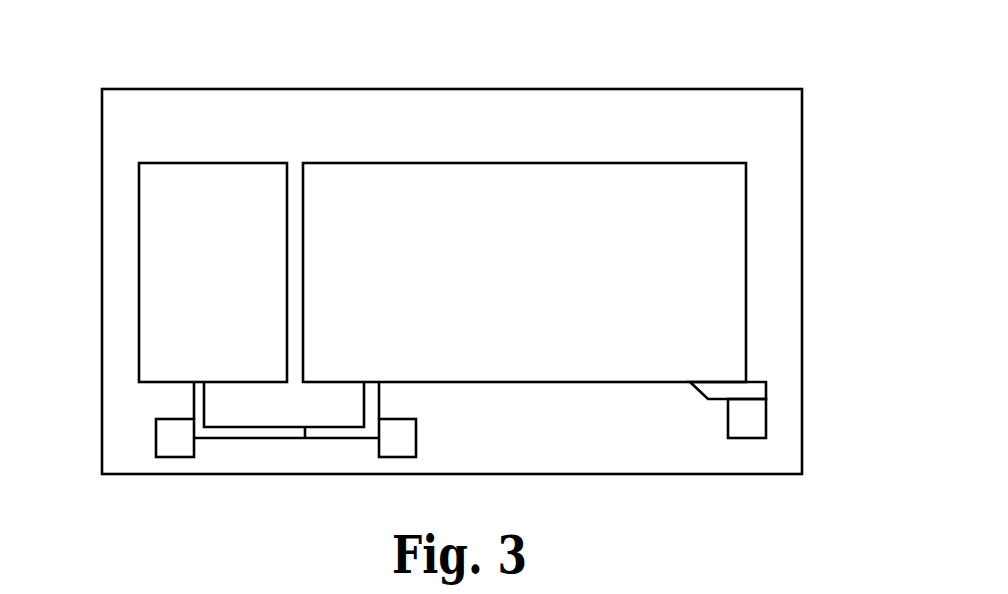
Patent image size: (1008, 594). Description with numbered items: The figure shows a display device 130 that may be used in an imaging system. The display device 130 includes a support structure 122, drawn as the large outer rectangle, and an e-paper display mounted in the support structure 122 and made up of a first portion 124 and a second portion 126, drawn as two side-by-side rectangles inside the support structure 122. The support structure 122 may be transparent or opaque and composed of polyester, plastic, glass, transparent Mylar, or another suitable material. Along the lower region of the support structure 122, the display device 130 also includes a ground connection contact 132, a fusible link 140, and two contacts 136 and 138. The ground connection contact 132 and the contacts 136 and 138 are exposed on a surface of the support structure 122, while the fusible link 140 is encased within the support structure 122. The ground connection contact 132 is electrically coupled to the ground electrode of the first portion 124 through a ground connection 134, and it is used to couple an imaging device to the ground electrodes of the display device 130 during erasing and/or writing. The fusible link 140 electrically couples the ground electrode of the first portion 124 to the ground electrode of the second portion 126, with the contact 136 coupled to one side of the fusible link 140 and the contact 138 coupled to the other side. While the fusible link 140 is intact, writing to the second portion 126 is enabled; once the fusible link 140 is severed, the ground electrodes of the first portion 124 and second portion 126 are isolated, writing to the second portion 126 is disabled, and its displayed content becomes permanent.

The support structure 122 is at (780, 143).
The first portion of the e-paper display 124 is at (732, 265).
The second portion of the e-paper display 126 is at (162, 280).
The display device 130 is at (714, 80).
The ground connection contact 132 is at (748, 415).
The ground connection 134 is at (752, 391).
The contact 136 is at (176, 442).
The contact 138 is at (398, 442).
The fusible link 140 is at (260, 431).